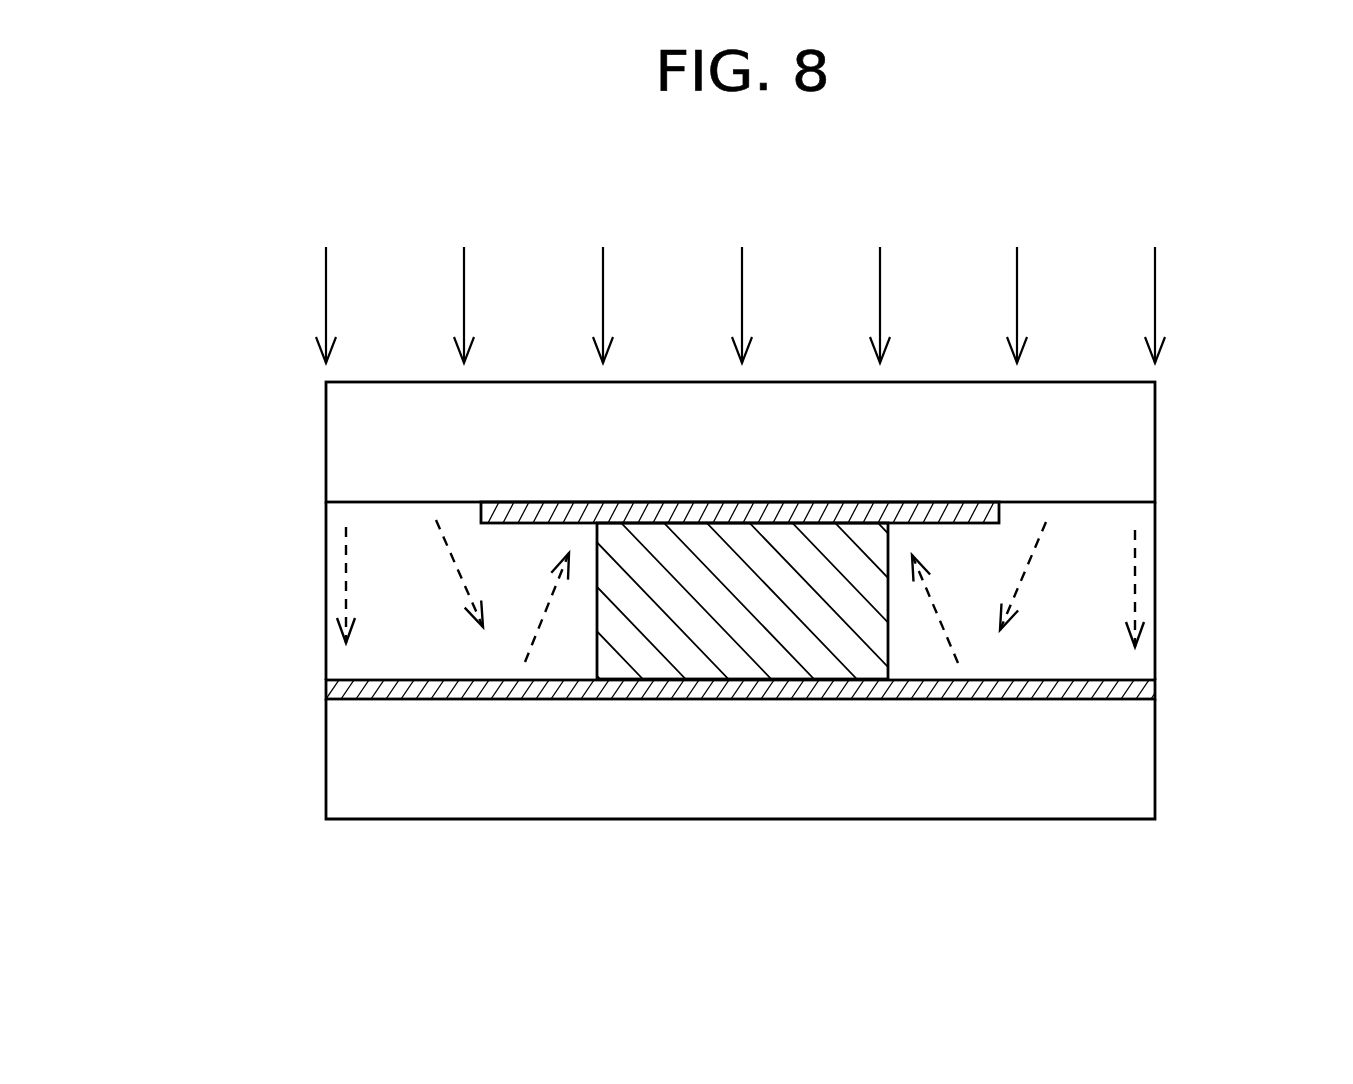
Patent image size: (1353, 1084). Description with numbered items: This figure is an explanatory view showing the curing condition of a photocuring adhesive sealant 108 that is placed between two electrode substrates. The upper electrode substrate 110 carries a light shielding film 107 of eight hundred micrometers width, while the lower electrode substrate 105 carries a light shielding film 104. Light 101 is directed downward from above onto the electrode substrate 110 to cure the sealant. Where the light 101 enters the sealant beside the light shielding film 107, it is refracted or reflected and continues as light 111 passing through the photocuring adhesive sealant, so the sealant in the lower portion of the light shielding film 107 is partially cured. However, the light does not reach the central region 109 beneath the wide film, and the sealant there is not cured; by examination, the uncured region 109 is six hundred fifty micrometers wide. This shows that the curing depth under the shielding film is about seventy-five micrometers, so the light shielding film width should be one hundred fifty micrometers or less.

The light 101 is at (742, 283).
The light shielding film 104 is at (1122, 692).
The electrode substrate 105 is at (1127, 755).
The light shielding film of 800 μm width 107 is at (975, 517).
The photocuring adhesive sealant 108 is at (1132, 667).
The region 109 is at (683, 648).
The electrode substrate 110 is at (1118, 440).
The light passing through a photocuring adhesive sealant 111 is at (345, 585).